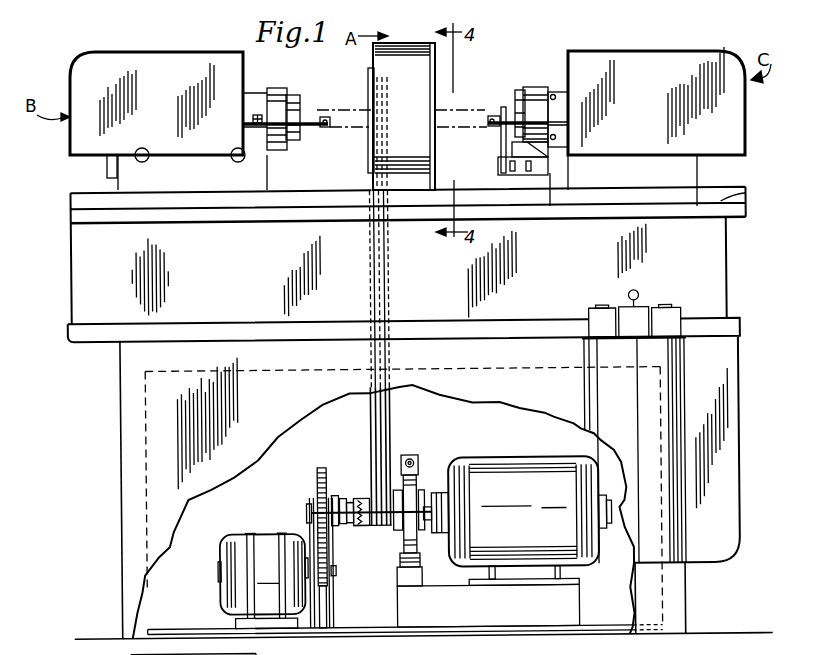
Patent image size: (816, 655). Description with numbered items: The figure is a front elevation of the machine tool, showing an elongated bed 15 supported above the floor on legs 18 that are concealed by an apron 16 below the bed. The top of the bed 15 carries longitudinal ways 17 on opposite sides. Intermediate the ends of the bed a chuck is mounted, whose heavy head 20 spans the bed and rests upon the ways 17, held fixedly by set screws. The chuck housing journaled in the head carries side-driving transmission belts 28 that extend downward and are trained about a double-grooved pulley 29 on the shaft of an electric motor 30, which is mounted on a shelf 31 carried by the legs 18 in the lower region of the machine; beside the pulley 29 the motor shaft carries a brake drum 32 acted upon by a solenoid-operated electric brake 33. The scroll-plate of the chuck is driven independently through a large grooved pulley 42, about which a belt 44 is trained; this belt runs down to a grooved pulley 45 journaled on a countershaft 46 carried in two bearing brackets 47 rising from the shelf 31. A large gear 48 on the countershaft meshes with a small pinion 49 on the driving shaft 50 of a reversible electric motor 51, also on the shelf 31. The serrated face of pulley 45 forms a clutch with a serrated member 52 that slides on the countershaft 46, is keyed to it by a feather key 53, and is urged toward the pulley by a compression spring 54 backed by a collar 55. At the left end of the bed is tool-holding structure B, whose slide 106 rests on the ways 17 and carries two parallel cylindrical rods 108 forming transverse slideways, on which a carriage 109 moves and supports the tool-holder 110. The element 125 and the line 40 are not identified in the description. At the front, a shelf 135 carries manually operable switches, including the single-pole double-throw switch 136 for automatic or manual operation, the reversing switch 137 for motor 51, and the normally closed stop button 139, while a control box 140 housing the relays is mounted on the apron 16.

The bed 15 is at (717, 248).
The apron 16 is at (120, 493).
The ways 17 is at (738, 201).
The legs 18 is at (662, 595).
The head 20 is at (414, 200).
The transmission belts 28 is at (390, 413).
The double-grooved pulley 29 is at (392, 533).
The electric motor 30 is at (519, 463).
The shelf 31 is at (605, 628).
The brake drum 32 is at (418, 532).
The solenoid-operated electric brake 33 is at (417, 463).
The axis of rotation 40 is at (468, 108).
The grooved pulley 42 is at (368, 72).
The transmission belt 44 is at (370, 410).
The grooved pulley 45 is at (359, 526).
The countershaft 46 is at (333, 495).
The bearing brackets 47 is at (305, 520).
The gear 48 is at (316, 470).
The pinion 49 is at (327, 588).
The driving shaft 50 is at (334, 570).
The reversible electric motor 51 is at (260, 533).
The serrated clutch member 52 is at (355, 524).
The feather key 53 is at (353, 500).
The compression spring 54 is at (348, 502).
The collar 55 is at (341, 498).
The slide 106 is at (208, 196).
The cylindrical rods 108 is at (149, 160).
The carriage 109 is at (262, 158).
The tool-holder 110 is at (278, 150).
The stop 125 is at (107, 172).
The shelf 135 is at (584, 342).
The single-pole double-throw switch 136 is at (589, 310).
The reversing switch 137 is at (645, 284).
The stop button 139 is at (669, 310).
The control box 140 is at (740, 463).